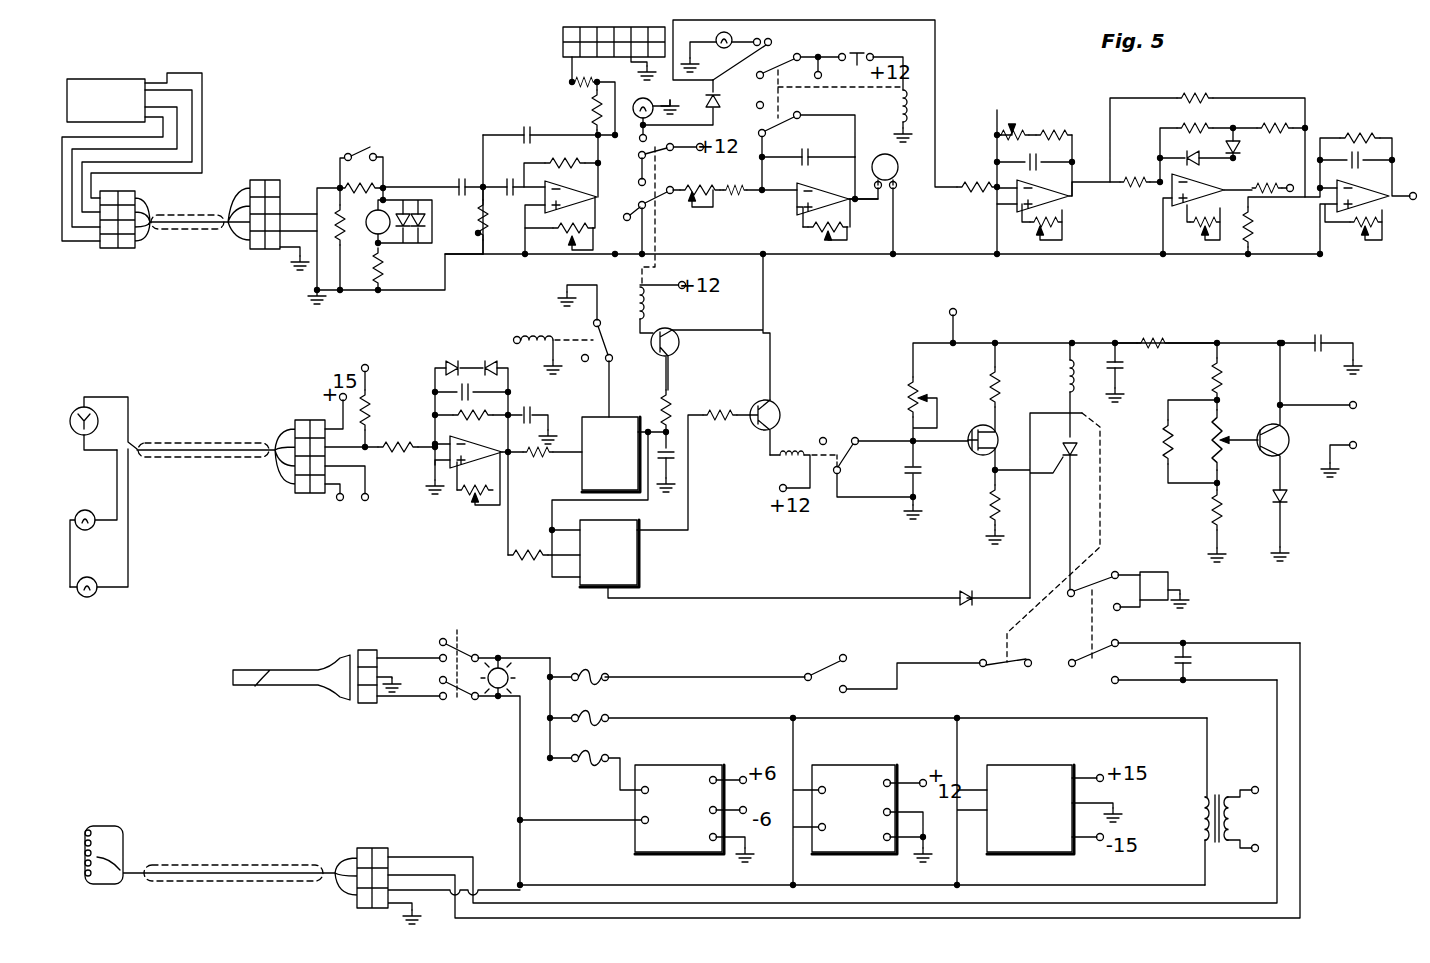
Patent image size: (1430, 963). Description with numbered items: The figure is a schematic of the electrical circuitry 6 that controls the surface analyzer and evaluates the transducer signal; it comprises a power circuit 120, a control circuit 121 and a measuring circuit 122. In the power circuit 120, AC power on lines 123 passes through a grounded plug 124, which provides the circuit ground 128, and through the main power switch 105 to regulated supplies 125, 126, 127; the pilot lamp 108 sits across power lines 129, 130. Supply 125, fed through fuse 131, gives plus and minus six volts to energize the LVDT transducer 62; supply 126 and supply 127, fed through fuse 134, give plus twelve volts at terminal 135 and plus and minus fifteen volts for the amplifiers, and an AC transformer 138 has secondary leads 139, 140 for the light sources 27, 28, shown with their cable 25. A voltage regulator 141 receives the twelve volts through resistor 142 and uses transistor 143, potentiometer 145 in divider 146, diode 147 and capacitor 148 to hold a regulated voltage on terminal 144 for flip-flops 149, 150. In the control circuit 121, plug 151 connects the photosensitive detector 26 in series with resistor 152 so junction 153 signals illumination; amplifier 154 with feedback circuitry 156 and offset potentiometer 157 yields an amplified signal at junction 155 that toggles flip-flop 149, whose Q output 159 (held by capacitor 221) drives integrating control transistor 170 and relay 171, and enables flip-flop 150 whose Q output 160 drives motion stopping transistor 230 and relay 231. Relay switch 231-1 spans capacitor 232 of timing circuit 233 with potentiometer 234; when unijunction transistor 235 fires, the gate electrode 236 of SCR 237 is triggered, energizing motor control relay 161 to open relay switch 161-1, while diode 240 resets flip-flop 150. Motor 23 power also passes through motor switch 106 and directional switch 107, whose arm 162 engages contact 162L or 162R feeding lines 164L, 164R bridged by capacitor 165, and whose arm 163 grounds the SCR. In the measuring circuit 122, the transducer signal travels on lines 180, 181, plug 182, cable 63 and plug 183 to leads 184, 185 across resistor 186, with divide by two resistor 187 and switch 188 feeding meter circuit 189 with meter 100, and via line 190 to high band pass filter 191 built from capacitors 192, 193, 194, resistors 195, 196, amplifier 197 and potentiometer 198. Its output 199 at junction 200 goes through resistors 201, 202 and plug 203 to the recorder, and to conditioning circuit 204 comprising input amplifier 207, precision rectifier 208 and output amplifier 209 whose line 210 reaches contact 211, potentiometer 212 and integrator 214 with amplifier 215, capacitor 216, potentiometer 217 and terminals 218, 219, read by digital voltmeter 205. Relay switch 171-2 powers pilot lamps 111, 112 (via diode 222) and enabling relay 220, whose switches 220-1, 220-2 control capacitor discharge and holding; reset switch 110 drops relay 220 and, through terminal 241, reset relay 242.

The electrical circuitry 6 is at (1275, 87).
The motor 23 is at (133, 848).
The cable 25 is at (141, 428).
The photosensitive detector 26 is at (76, 407).
The light source 27 is at (86, 510).
The light source 28 is at (90, 598).
The LVDT transducer 62 is at (121, 79).
The cable 63 is at (199, 238).
The meter 100 is at (368, 219).
The main power on-off switch 105 is at (454, 633).
The motor power on-off switch 106 is at (826, 660).
The directional control switch 107 is at (1160, 568).
The power indicator pilot lamp 108 is at (492, 690).
The reset switch 110 is at (857, 53).
The integrator operating indicator pilot lamp 111 is at (656, 112).
The integrator holding indicator pilot lamp 112 is at (716, 39).
The power circuit 120 is at (324, 636).
The control circuit 121 is at (305, 368).
The measuring circuit 122 is at (386, 110).
The power input lines 123 is at (270, 669).
The grounded plug 124 is at (365, 650).
The regulated DC power supply 125 is at (668, 765).
The regulated DC power supply 126 is at (860, 765).
The regulated DC power supply 127 is at (1040, 765).
The circuit ground 128 is at (300, 260).
The power line 129 is at (520, 656).
The power line 130 is at (520, 748).
The fuse 131 is at (595, 755).
The fuse 134 is at (600, 714).
The output terminal 135 is at (920, 779).
The AC transformer 138 is at (1215, 786).
The secondary lead 139 is at (336, 499).
The secondary lead 140 is at (367, 499).
The voltage regulator 141 is at (1301, 316).
The resistor 142 is at (1153, 338).
The transistor 143 is at (1290, 444).
The collector output terminal 144 is at (1308, 404).
The potentiometer 145 is at (1232, 432).
The resistance divider circuit 146 is at (1229, 350).
The diode 147 is at (1290, 498).
The capacitor 148 is at (1320, 335).
The J-K flip-flop integrated circuit 149 is at (592, 416).
The J-K flip-flop integrated circuit 150 is at (640, 575).
The plug 151 is at (303, 418).
The resistor 152 is at (400, 440).
The junction 153 is at (370, 450).
The amplifier 154 is at (457, 444).
The junction 155 is at (512, 456).
The feed-back circuitry 156 is at (472, 360).
The offset adjusting potentiometer 157 is at (468, 497).
The Q output 159 is at (664, 430).
The Q output 160 is at (655, 533).
The motor control relay 161 is at (1062, 390).
The relay switch 161-1 is at (992, 668).
The switch arm 162 is at (1085, 668).
The contact 162L is at (1114, 612).
The contact 162R is at (1160, 682).
The switch arm 163 is at (1097, 582).
The line 164L is at (1250, 640).
The line 164R is at (1273, 715).
The capacitor 165 is at (1190, 660).
The integrating control transistor 170 is at (678, 342).
The relay 171 is at (645, 303).
The relay switch 171-2 is at (688, 186).
The line 180 is at (177, 118).
The line 181 is at (163, 130).
The plug 182 is at (124, 252).
The plug 183 is at (260, 249).
The lead 184 is at (317, 186).
The lead 185 is at (330, 294).
The resistor 186 is at (341, 240).
The divide by 2 resistor 187 is at (335, 184).
The switch 188 is at (362, 152).
The meter circuit 189 is at (394, 182).
The line 190 is at (415, 186).
The high band pass filter 191 is at (480, 133).
The DC blocking capacitor 192 is at (462, 175).
The capacitor 193 is at (527, 130).
The capacitor 194 is at (512, 182).
The resistor 195 is at (552, 160).
The resistor 196 is at (477, 233).
The integrated circuit amplifier 197 is at (543, 198).
The offset adjusting potentiometer 198 is at (568, 232).
The filter output 199 is at (596, 181).
The junction 200 is at (597, 130).
The resistor 201 is at (591, 106).
The resistor 202 is at (571, 77).
The plug 203 is at (562, 34).
The conditioning circuit 204 is at (1027, 104).
The digital voltmeter 205 is at (897, 180).
The input amplifier 207 is at (1073, 128).
The precision rectifier 208 is at (1226, 92).
The output amplifier 209 is at (1384, 130).
The output line 210 is at (617, 256).
The contact 211 is at (626, 192).
The input potentiometer 212 is at (722, 188).
The integrator 214 is at (861, 174).
The integrated circuit amplifier 215 is at (800, 187).
The integrating capacitor 216 is at (805, 154).
The offset adjusting potentiometer 217 is at (812, 234).
The output terminal 218 is at (849, 228).
The terminal 219 is at (899, 212).
The integrator enabling relay 220 is at (912, 104).
The relay switch 220-1 is at (782, 112).
The relay switch 220-2 is at (772, 44).
The capacitor 221 is at (680, 455).
The diode 222 is at (718, 104).
The motion stopping transistor 230 is at (772, 402).
The motion stopping relay 231 is at (790, 452).
The relay switch 231-1 is at (850, 440).
The capacitor 232 is at (922, 470).
The relaxation oscillator timing circuit 233 is at (906, 372).
The adjustable potentiometer 234 is at (925, 393).
The unijunction transistor 235 is at (968, 430).
The gate electrode 236 is at (1058, 473).
The SCR 237 is at (1063, 448).
The diode 240 is at (983, 592).
The terminal 241 is at (814, 78).
The reset relay 242 is at (520, 337).